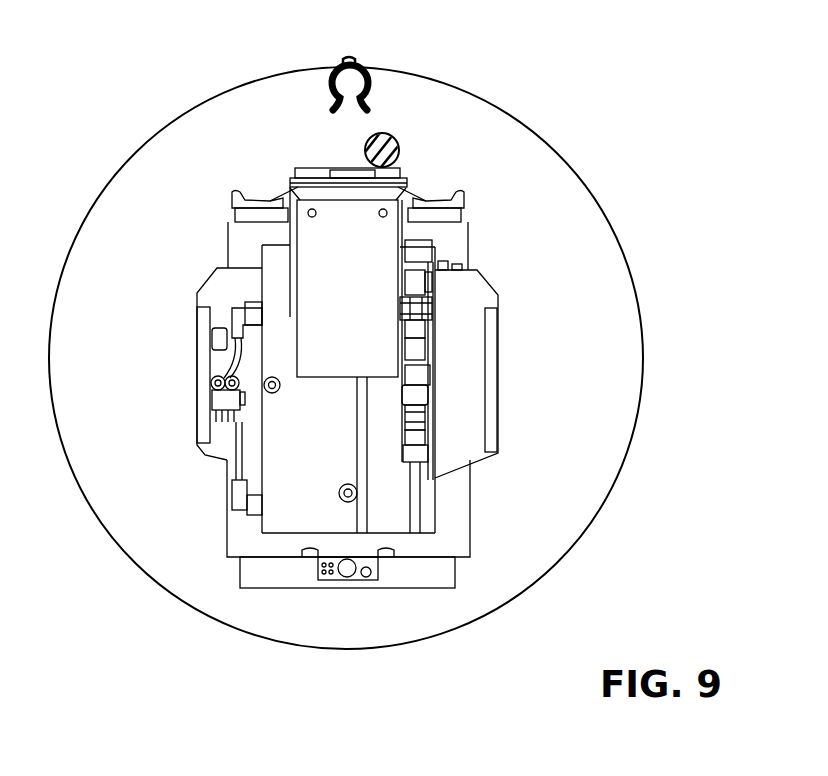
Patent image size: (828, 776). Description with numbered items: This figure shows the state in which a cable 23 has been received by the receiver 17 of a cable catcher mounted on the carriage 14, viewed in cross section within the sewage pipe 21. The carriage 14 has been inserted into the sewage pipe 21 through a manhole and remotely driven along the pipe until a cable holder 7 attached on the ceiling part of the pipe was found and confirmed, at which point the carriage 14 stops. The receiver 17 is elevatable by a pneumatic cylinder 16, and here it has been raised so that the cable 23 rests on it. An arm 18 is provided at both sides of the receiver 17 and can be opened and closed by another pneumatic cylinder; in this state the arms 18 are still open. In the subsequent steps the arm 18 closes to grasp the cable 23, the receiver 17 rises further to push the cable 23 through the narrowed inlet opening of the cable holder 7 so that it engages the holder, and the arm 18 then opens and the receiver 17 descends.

The cable holder 7 is at (328, 80).
The carriage 14 is at (473, 480).
The pneumatic cylinder 16 is at (317, 275).
The receiver 17 is at (310, 168).
The arm 18 is at (253, 203).
The sewage pipe 21 is at (90, 213).
The cable 23 is at (400, 148).